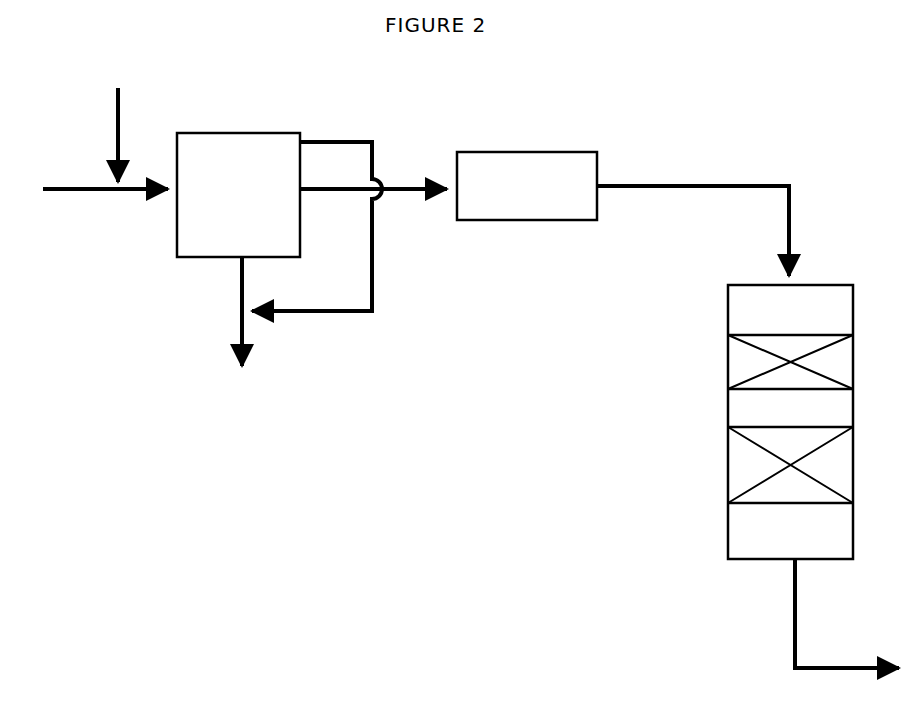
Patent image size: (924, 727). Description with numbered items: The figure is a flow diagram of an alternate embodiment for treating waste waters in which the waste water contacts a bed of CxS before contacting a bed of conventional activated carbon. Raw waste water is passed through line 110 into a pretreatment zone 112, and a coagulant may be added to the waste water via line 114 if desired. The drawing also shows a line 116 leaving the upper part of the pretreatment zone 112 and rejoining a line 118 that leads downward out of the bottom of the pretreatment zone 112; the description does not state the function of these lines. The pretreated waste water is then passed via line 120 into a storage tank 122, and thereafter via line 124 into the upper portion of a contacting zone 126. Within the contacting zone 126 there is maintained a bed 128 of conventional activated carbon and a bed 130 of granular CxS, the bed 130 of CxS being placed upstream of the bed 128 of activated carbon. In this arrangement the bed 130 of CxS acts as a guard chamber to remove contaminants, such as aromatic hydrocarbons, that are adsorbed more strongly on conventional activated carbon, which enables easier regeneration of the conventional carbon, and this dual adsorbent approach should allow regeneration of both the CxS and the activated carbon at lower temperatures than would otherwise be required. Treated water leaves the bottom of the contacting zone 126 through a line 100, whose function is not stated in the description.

The product stream 100 is at (823, 667).
The line 110 is at (68, 192).
The pretreatment zone 112 is at (238, 132).
The line 114 is at (121, 105).
The recycle line 116 is at (375, 287).
The withdrawal line 118 is at (236, 341).
The line 120 is at (397, 182).
The storage tank 122 is at (518, 148).
The line 124 is at (685, 183).
The contacting zone 126 is at (843, 284).
The bed of conventional activated carbon 128 is at (840, 467).
The bed of granular CxS 130 is at (843, 365).